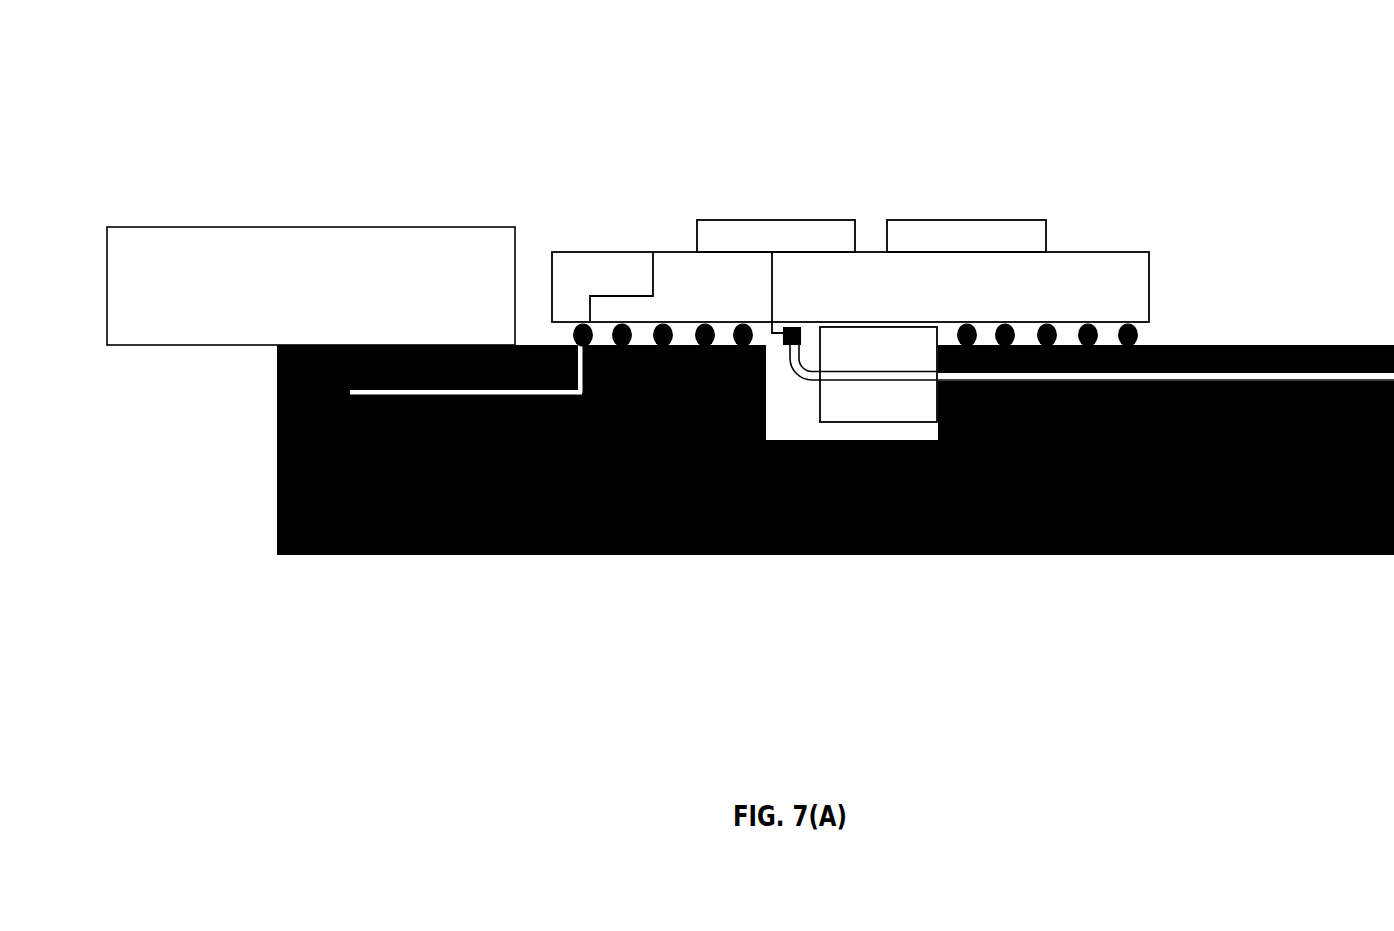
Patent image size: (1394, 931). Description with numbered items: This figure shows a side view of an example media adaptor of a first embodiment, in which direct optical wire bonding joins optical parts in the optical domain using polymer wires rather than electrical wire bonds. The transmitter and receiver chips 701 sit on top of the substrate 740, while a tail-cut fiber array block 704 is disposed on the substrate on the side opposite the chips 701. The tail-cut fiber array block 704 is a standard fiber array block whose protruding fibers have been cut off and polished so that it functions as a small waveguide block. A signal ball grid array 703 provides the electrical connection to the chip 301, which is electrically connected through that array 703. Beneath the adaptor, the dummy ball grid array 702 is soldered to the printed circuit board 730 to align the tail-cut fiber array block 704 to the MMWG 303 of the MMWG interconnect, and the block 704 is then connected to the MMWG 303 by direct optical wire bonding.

The chip 301 is at (328, 296).
The MMWG 303 is at (865, 370).
The transmitter and receiver chips 701 is at (962, 214).
The dummy ball grid array 702 is at (1110, 338).
The signal ball grid array 703 is at (850, 255).
The tail-cut fiber array block 704 is at (872, 347).
The printed circuit board 730 is at (277, 487).
The substrate 740 is at (605, 245).